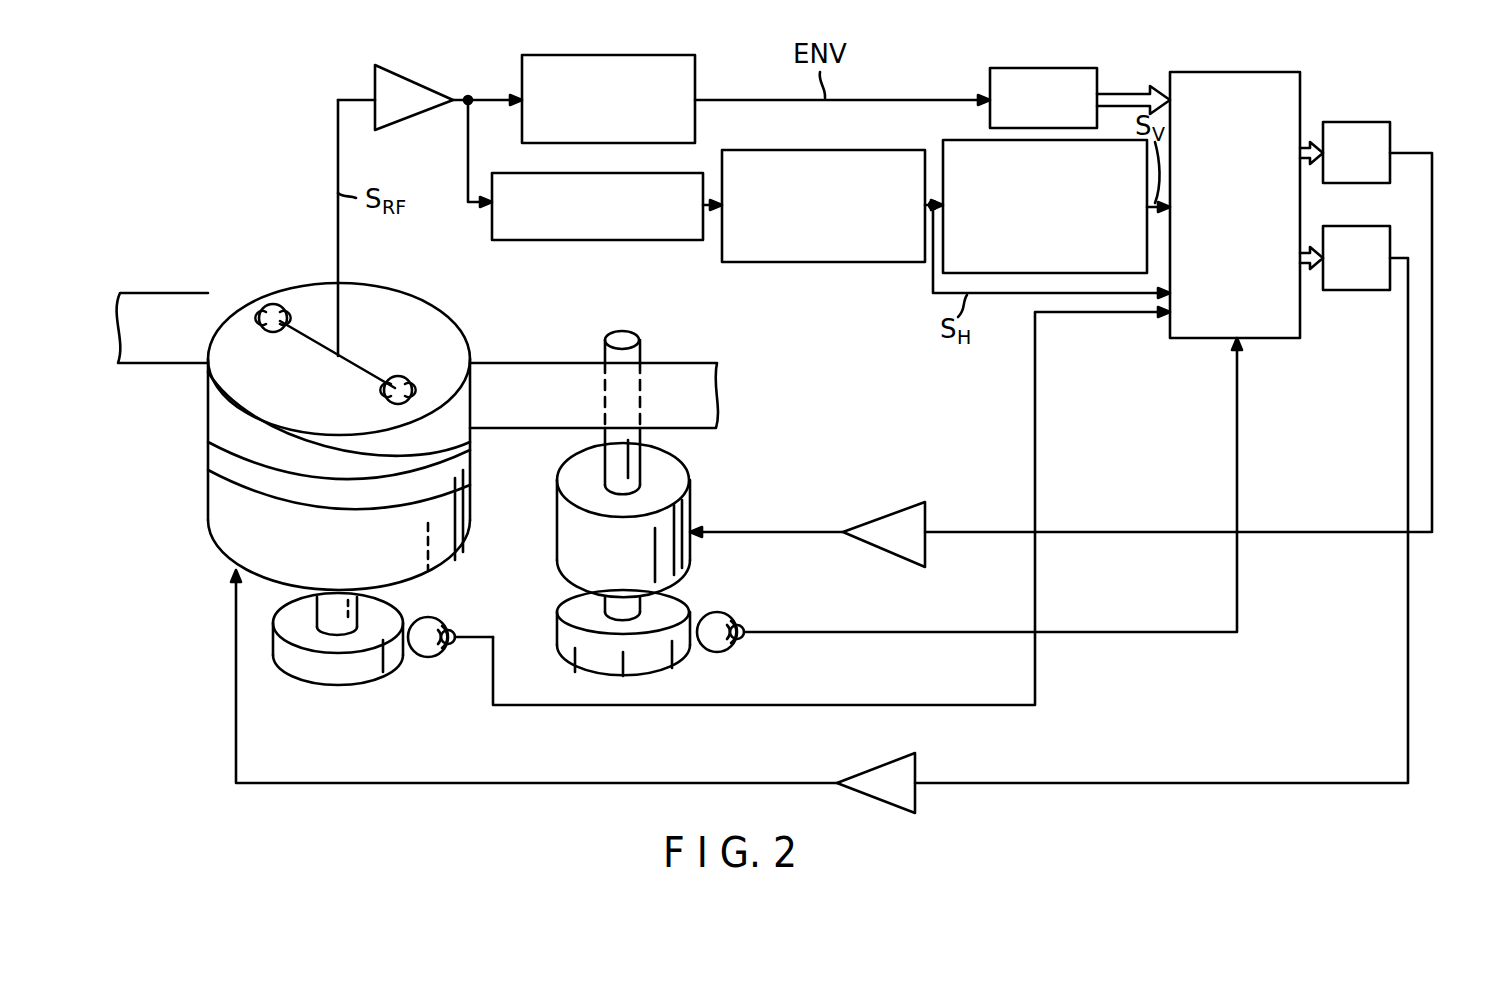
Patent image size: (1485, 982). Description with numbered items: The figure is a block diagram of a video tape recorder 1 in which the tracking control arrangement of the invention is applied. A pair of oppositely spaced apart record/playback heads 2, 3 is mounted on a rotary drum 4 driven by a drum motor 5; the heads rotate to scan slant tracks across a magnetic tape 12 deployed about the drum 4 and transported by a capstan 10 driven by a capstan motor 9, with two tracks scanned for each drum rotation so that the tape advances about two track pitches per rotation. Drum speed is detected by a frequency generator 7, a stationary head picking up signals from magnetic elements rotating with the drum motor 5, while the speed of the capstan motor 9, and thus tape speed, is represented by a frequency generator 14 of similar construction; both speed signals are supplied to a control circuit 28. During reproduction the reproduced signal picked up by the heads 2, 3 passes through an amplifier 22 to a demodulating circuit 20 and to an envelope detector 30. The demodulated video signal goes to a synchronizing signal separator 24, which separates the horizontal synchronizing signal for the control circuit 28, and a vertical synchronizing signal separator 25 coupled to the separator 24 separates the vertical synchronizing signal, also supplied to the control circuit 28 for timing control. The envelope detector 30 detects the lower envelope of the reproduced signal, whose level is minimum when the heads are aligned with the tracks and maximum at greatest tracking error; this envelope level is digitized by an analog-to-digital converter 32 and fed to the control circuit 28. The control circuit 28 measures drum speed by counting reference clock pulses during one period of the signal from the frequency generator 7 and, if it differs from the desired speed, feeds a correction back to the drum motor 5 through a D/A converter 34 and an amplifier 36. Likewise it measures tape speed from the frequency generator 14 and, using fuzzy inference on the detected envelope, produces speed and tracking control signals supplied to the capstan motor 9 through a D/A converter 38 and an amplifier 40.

The video tape recorder tracking control apparatus 1 is at (1157, 798).
The record/playback head 2 is at (268, 306).
The record/playback head 3 is at (406, 386).
The rotary drum 4 is at (218, 419).
The drum motor 5 is at (225, 543).
The frequency generator 7 is at (437, 627).
The capstan motor 9 is at (690, 465).
The capstan 10 is at (642, 343).
The magnetic tape 12 is at (537, 365).
The frequency generator 14 is at (708, 653).
The demodulating circuit 20 is at (607, 241).
The amplifier 22 is at (407, 66).
The synchronizing signal separator 24 is at (802, 263).
The vertical synchronizing signal separator 25 is at (943, 140).
The control circuit 28 is at (1233, 72).
The envelope detector 30 is at (648, 55).
The analog-to-digital (A/D) converter 32 is at (1043, 68).
The D/A converter 34 is at (1352, 292).
The amplifier 36 is at (885, 763).
The D/A converter 38 is at (1357, 122).
The amplifier 40 is at (888, 512).